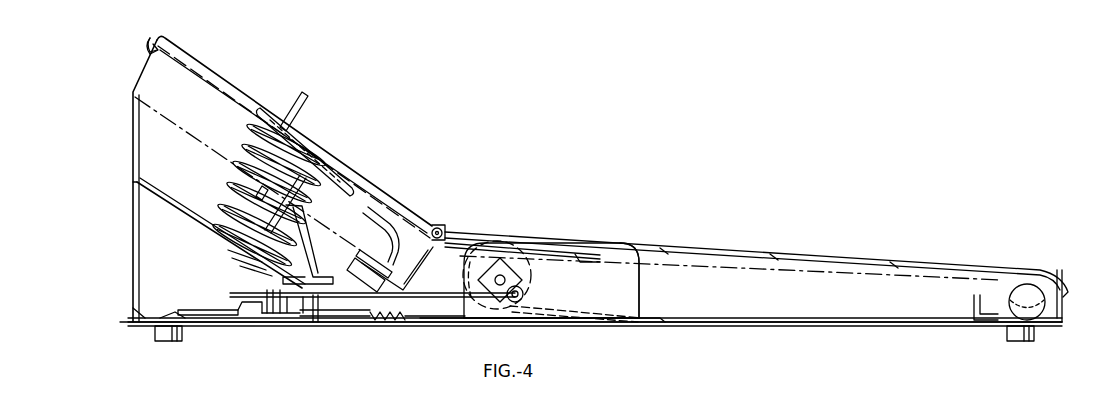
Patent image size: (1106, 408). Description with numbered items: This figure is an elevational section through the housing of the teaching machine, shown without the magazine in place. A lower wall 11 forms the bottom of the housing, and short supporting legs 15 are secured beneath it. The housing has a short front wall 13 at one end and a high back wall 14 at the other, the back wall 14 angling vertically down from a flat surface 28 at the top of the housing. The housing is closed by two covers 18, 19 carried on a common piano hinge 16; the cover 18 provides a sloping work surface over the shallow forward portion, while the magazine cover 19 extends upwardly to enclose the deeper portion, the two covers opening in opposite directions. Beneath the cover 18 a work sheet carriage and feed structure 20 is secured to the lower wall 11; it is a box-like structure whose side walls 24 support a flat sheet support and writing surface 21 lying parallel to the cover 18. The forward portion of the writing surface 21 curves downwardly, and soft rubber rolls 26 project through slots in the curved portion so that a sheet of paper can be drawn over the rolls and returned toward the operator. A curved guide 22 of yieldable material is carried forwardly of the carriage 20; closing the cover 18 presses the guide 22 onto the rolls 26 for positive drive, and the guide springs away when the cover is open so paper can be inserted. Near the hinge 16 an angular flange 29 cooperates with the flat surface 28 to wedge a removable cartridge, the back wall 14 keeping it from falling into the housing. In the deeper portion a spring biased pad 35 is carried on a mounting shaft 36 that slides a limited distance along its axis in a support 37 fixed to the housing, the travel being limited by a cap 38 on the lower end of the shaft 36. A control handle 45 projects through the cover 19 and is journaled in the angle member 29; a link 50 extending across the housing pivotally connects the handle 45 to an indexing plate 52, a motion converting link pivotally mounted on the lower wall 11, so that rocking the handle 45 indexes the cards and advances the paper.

The lower wall 11 is at (740, 324).
The short front wall 13 is at (1064, 312).
The high back wall 14 is at (133, 272).
The supporting legs 15 is at (170, 342).
The hinge 16 is at (436, 227).
The cover 18 is at (712, 252).
The cover 19 is at (398, 200).
The work sheet carriage and feed structure 20 is at (630, 296).
The sheet support and writing surface portion 21 is at (585, 252).
The curved guide 22 is at (600, 322).
The side walls 24 is at (645, 262).
The soft rubber rolls 26 is at (532, 274).
The flat surface 28 is at (152, 50).
The angular flange 29 is at (418, 264).
The spring biased pad 35 is at (332, 168).
The mounting shaft 36 is at (244, 152).
The support 37 is at (186, 210).
The limiting cap 38 is at (240, 260).
The control handle 45 is at (306, 112).
The link 50 is at (308, 258).
The indexing plate 52 is at (240, 304).